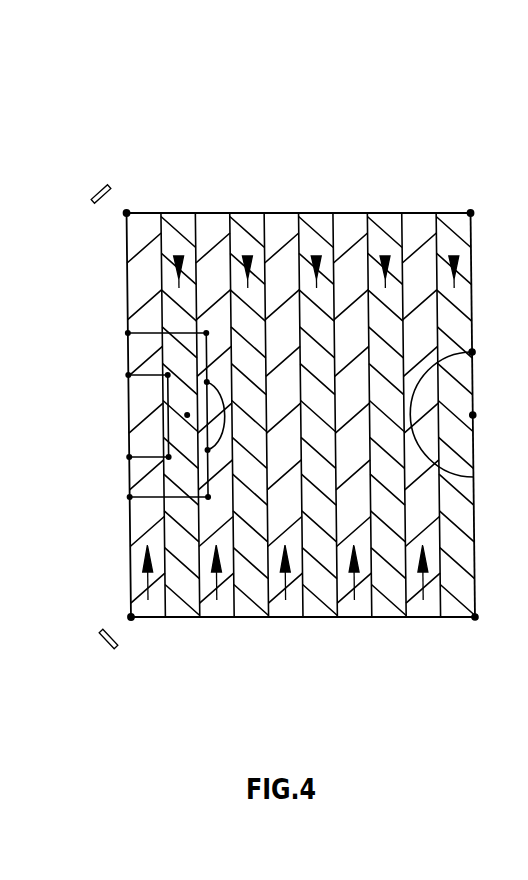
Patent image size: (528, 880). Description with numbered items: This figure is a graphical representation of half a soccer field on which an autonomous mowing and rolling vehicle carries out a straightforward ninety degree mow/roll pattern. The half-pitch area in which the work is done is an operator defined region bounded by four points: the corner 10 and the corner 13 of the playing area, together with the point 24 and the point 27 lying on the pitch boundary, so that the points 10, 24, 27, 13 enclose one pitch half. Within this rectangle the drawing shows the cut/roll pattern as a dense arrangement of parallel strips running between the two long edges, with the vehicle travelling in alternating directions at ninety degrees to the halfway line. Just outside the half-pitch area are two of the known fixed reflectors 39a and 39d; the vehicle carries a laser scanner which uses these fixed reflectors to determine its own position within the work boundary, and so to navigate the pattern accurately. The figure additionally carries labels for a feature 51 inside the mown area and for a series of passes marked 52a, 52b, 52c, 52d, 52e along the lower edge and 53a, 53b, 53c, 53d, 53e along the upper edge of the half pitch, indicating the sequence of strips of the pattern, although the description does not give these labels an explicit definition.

The corner 10 is at (126, 213).
The corner 13 is at (131, 617).
The point 24 is at (470, 213).
The point 27 is at (475, 617).
The sensor circuit 51 is at (166, 232).
The fixed reflector 39a is at (90, 191).
The fixed reflector 39d is at (100, 643).
The inlet flow channel 52a is at (148, 600).
The inlet flow channel 52b is at (217, 600).
The inlet flow channel 52c is at (286, 600).
The inlet flow channel 52d is at (354, 600).
The inlet flow channel 52e is at (423, 600).
The outlet flow channel 53a is at (179, 256).
The outlet flow channel 53b is at (247, 256).
The outlet flow channel 53c is at (316, 256).
The outlet flow channel 53d is at (385, 256).
The outlet flow channel 53e is at (454, 256).